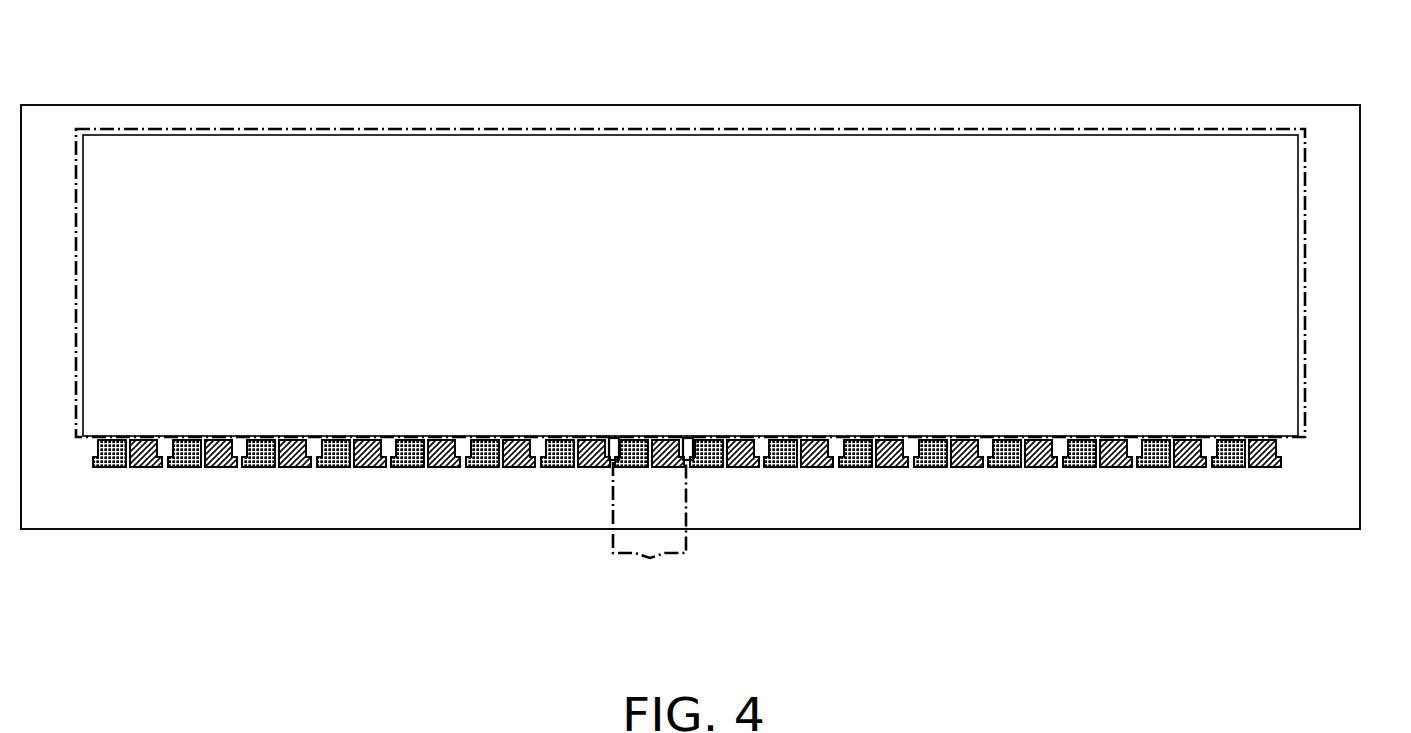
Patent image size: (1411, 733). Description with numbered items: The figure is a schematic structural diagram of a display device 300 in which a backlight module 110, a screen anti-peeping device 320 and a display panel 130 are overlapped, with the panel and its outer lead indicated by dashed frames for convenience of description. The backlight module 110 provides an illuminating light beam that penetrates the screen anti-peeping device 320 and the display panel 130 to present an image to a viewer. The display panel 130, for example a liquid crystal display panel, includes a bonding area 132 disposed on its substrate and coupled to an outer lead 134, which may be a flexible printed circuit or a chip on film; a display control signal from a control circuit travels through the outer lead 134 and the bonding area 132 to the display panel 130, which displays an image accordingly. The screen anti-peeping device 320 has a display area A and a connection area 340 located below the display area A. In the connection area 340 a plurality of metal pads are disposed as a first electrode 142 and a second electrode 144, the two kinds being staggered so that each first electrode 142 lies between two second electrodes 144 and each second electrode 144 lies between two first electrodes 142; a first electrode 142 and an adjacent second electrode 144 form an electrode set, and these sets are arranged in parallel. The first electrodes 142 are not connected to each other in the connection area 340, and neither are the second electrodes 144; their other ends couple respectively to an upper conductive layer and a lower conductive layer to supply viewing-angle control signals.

The display device 300 is at (1385, 646).
The backlight module 110 is at (697, 105).
The screen anti-peeping device 320 is at (817, 135).
The display panel 130 is at (953, 128).
The display area A is at (488, 188).
The connection area 340 is at (76, 452).
The first electrode 142 is at (405, 466).
The second electrode 144 is at (442, 466).
The bonding area 132 is at (618, 436).
The outer lead 134 is at (650, 560).